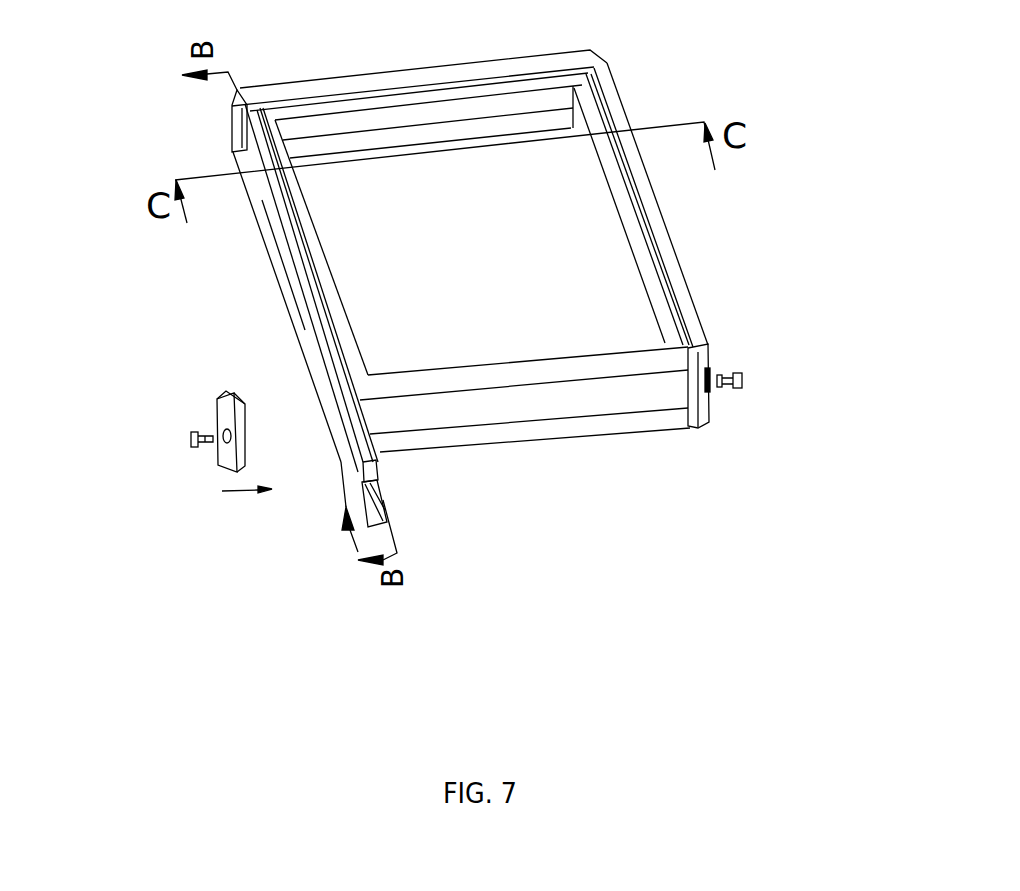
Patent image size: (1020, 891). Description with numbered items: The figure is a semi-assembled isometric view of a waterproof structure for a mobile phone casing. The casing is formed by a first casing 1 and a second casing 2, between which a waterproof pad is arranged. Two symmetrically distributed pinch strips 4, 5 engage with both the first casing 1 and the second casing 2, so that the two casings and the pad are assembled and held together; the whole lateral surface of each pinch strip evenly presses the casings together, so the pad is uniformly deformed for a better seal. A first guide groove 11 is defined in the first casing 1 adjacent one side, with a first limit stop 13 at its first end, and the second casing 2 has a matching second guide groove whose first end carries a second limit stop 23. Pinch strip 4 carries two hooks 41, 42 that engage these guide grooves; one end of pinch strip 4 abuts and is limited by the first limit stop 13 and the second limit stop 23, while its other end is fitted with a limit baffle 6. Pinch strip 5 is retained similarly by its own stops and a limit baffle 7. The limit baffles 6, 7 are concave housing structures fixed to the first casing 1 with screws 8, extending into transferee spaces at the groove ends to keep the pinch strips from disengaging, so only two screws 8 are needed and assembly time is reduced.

The first casing 1 is at (397, 82).
The second casing 2 is at (517, 436).
The pinch strip 4 is at (310, 323).
The pinch strip 5 is at (667, 250).
The limit baffle 6 is at (223, 395).
The limit baffle 7 is at (710, 365).
The screw 8 is at (743, 383).
The first guide groove 11 is at (287, 237).
The first limit stop 13 is at (238, 114).
The second limit stop 23 is at (231, 151).
The hook 41 is at (373, 470).
The hook 42 is at (390, 523).